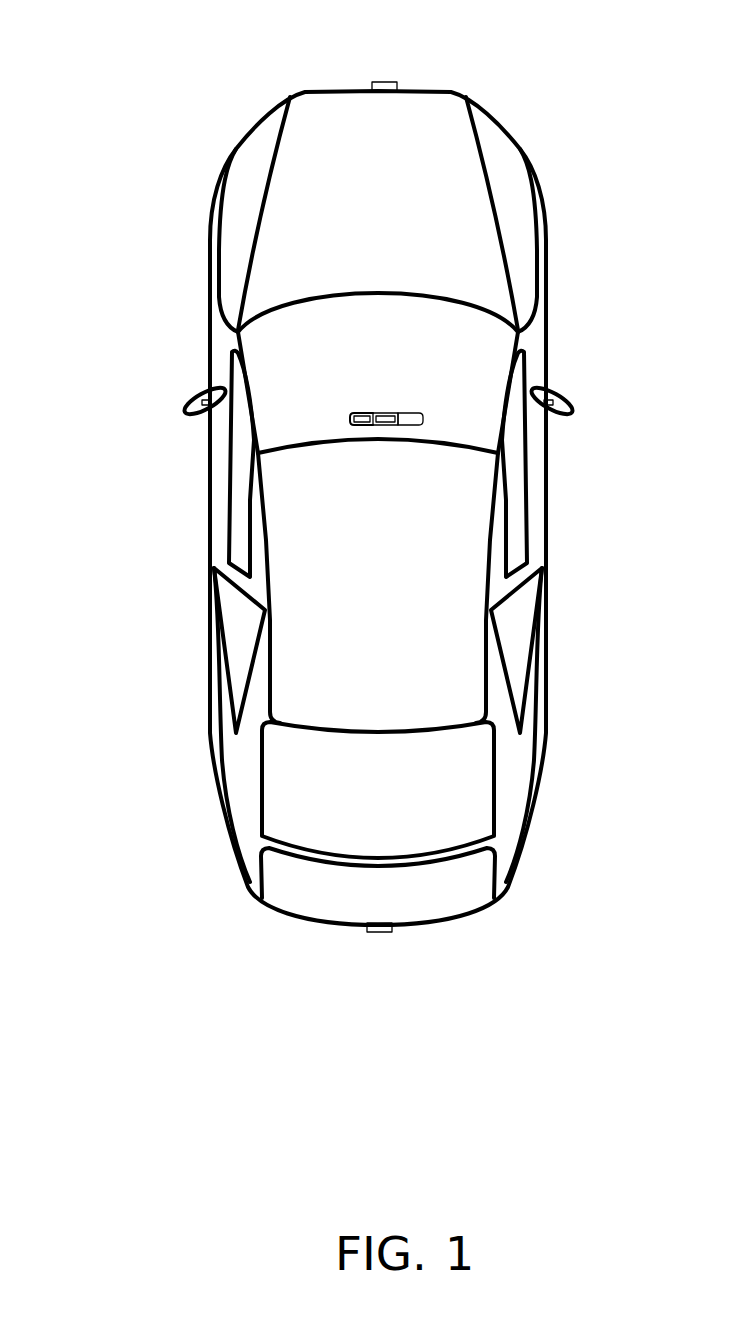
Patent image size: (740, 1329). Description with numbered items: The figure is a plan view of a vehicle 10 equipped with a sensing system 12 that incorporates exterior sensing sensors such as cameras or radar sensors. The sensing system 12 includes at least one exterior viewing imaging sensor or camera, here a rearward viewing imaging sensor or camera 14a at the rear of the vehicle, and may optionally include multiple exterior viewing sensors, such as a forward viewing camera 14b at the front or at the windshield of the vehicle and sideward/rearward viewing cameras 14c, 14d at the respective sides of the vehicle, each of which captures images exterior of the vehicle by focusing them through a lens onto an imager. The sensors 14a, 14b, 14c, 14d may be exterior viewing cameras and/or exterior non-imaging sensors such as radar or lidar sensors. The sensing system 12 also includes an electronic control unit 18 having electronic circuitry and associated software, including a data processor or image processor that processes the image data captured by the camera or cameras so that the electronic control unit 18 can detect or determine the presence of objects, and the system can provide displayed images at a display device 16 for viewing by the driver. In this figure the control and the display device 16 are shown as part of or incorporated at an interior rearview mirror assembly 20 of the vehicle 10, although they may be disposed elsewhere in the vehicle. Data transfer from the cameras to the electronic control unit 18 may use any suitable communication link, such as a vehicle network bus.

The vehicle 10 is at (146, 103).
The sensing system 12 is at (330, 945).
The rearward viewing imaging sensor or camera 14a is at (390, 933).
The forward viewing camera 14b is at (392, 82).
The sideward/rearward viewing camera 14c is at (196, 392).
The sideward/rearward viewing camera 14d is at (563, 393).
The display device 16 is at (363, 413).
The electronic control unit (ECU) 18 is at (382, 413).
The interior rearview mirror assembly 20 is at (421, 418).